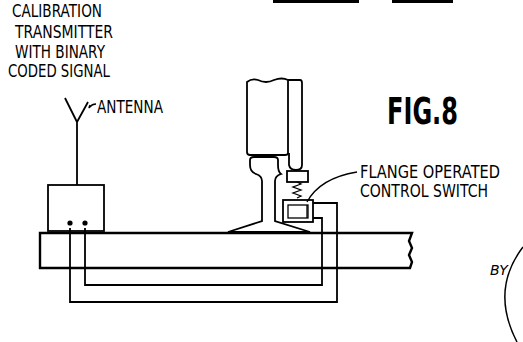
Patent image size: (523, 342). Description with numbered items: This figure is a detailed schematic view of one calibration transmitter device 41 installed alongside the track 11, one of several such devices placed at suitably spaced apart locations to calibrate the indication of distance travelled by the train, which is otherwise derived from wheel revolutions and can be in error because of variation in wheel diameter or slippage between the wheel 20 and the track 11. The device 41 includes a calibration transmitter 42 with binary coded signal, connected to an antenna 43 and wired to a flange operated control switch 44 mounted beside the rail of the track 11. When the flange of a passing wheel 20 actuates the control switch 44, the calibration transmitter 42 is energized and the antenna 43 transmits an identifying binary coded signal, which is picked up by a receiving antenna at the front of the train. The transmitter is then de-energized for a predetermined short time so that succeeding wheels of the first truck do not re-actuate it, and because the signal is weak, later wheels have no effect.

The track 11 is at (263, 205).
The wheel 20 is at (302, 138).
The calibration transmitter device 41 is at (180, 222).
The calibration transmitter 42 is at (100, 210).
The antenna 43 is at (78, 148).
The control switch 44 is at (317, 203).